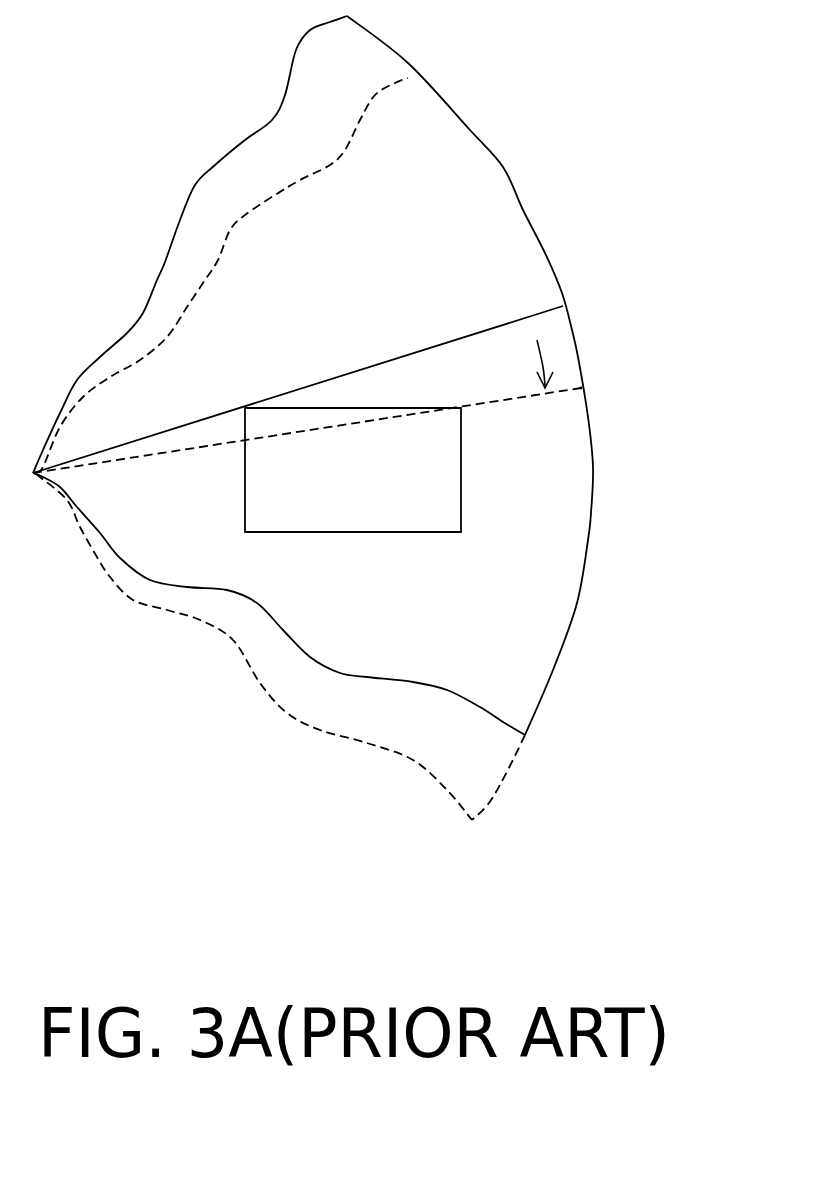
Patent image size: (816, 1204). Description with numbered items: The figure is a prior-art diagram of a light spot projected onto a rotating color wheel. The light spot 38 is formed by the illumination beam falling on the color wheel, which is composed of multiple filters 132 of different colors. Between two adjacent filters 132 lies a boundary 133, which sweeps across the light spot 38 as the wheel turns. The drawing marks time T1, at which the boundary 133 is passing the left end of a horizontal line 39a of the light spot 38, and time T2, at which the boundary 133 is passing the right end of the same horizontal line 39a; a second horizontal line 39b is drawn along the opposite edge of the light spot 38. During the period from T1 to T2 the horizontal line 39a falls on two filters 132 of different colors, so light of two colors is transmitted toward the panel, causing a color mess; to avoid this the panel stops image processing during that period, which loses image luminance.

The filter 132 is at (480, 188).
The boundary 133 is at (513, 320).
The time T1 is at (566, 326).
The time T2 is at (600, 397).
The light spot 38 is at (461, 487).
The horizontal line 39a is at (420, 408).
The horizontal line 39b is at (395, 533).